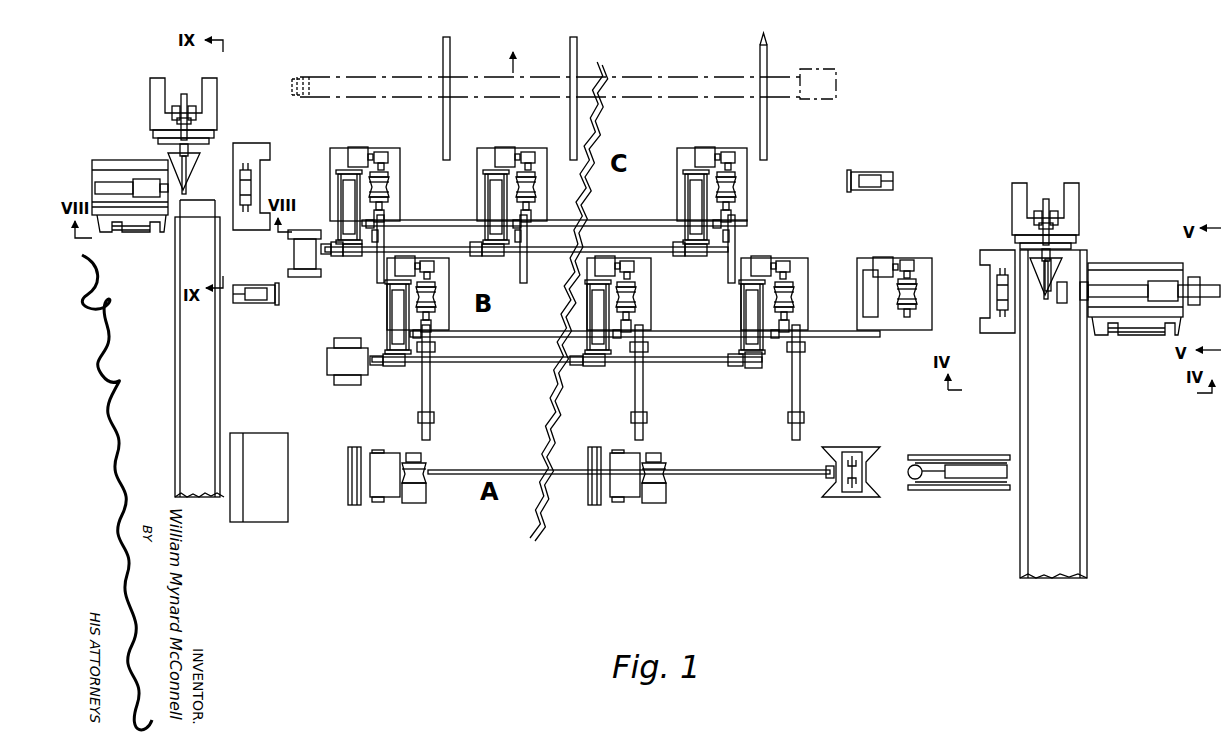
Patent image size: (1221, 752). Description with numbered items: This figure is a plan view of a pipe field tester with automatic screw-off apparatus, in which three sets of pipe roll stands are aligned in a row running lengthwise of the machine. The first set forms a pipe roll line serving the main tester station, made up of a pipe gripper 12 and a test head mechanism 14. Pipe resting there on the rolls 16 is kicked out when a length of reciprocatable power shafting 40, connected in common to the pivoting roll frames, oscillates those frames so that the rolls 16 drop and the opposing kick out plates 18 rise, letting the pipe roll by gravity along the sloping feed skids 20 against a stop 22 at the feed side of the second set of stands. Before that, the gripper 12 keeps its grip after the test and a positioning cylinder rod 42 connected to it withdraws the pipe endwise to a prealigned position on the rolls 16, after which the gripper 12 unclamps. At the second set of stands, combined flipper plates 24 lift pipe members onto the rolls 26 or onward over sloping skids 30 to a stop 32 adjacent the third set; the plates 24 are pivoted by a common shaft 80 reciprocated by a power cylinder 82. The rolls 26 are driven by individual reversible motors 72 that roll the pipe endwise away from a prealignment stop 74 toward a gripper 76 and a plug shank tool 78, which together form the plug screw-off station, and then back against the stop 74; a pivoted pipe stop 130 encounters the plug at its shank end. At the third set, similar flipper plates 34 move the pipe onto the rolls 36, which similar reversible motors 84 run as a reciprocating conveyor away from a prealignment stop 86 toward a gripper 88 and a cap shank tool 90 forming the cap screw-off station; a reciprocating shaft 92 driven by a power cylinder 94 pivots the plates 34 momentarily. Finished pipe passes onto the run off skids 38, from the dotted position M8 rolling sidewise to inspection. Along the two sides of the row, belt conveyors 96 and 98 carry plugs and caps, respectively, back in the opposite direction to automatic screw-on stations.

The pipe gripper 12 is at (845, 496).
The test head mechanism 14 is at (962, 491).
The rolls 16 is at (412, 474).
The kick out plates 18 is at (338, 475).
The feed skids 20 is at (421, 394).
The stop 22 is at (617, 345).
The combined flipper plates 24 is at (378, 317).
The rolls 26 is at (652, 301).
The sloping skids 30 is at (736, 252).
The stop 32 is at (718, 248).
The combined flipper plates 34 is at (476, 207).
The rolls 36 is at (753, 191).
The run off skids 38 is at (569, 43).
The reciprocatable power shafting 40 is at (512, 470).
The positioning cylinder rod 42 is at (822, 470).
The reversible motors 72 is at (603, 262).
The prealignment stop 74 is at (259, 306).
The gripper 76 is at (996, 292).
The plug shank tool 78 is at (1085, 280).
The common shaft 80 is at (508, 363).
The power cylinder 82 is at (327, 361).
The reversible motors 84 is at (513, 145).
The prealignment stop 86 is at (863, 172).
The gripper 88 is at (262, 178).
The cap shank tool 90 is at (186, 176).
The reciprocating shaft 92 is at (457, 256).
The power cylinder 94 is at (322, 260).
The belt conveyor 96 is at (1087, 400).
The belt conveyor 98 is at (178, 270).
The pipe stop 130 is at (1047, 291).
The pipe position M8 is at (676, 72).